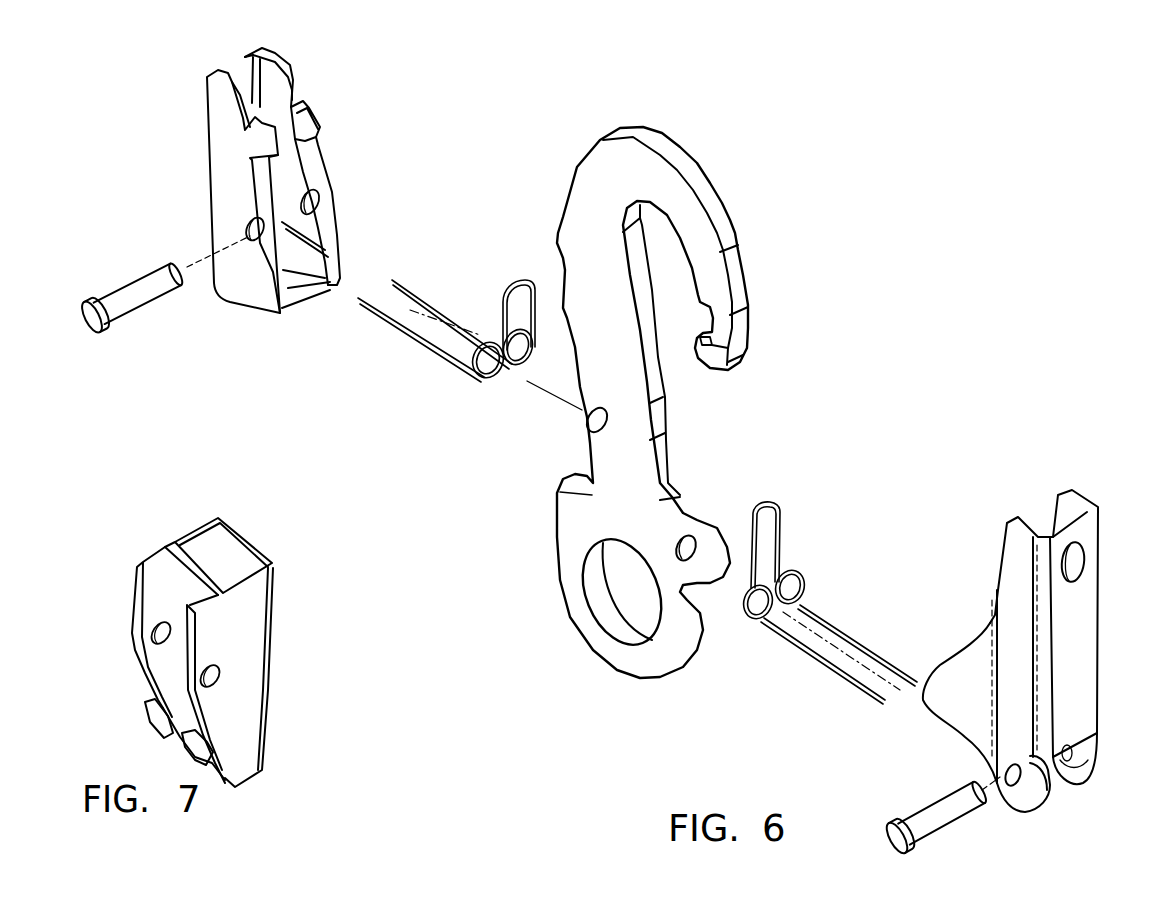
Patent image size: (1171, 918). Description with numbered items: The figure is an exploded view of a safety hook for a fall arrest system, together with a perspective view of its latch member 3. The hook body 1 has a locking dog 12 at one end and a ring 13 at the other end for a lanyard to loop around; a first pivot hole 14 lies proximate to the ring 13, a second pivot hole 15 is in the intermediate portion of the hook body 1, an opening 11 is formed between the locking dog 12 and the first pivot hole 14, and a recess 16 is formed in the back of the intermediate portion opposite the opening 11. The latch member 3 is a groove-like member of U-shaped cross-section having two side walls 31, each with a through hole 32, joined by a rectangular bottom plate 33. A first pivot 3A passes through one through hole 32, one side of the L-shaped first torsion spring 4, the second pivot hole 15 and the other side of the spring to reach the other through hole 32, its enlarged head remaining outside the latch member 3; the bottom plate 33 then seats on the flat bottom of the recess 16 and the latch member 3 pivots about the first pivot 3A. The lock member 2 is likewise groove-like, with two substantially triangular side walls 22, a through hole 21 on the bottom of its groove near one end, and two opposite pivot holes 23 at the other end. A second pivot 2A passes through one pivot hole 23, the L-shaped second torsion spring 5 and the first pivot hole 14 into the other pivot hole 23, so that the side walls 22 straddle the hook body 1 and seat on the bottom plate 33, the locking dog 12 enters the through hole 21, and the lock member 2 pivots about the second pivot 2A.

In FIG. 6, the hook body 1 is at (563, 172).
In FIG. 6, the opening 11 is at (693, 430).
In FIG. 6, the locking dog 12 is at (710, 345).
In FIG. 6, the ring 13 is at (587, 614).
In FIG. 6, the first pivot hole 14 is at (690, 553).
In FIG. 6, the second pivot hole 15 is at (590, 426).
In FIG. 6, the recess 16 is at (543, 420).
In FIG. 6, the lock member 2 is at (1038, 661).
In FIG. 6, the through hole 21 is at (1078, 553).
In FIG. 6, the side walls 22 is at (953, 677).
In FIG. 6, the pivot holes 23 is at (1027, 782).
In FIG. 6, the second pivot 2A is at (937, 800).
In FIG. 6, the latch member 3 is at (263, 211).
In FIG. 7, the latch member 3 is at (206, 641).
In FIG. 6, the side walls 31 is at (303, 163).
In FIG. 7, the side walls 31 is at (163, 590).
In FIG. 6, the through hole 32 is at (310, 204).
In FIG. 7, the through hole 32 is at (153, 627).
In FIG. 6, the bottom plate 33 is at (300, 290).
In FIG. 7, the bottom plate 33 is at (227, 540).
In FIG. 6, the first pivot 3A is at (135, 320).
In FIG. 6, the first torsion spring 4 is at (440, 300).
In FIG. 6, the second torsion spring 5 is at (847, 617).